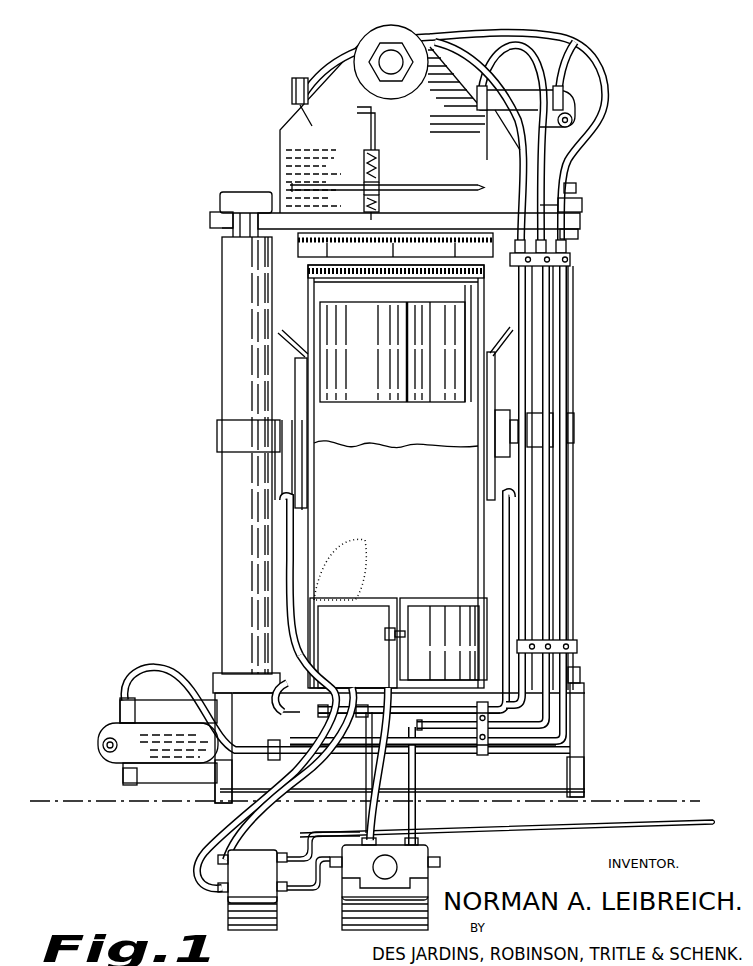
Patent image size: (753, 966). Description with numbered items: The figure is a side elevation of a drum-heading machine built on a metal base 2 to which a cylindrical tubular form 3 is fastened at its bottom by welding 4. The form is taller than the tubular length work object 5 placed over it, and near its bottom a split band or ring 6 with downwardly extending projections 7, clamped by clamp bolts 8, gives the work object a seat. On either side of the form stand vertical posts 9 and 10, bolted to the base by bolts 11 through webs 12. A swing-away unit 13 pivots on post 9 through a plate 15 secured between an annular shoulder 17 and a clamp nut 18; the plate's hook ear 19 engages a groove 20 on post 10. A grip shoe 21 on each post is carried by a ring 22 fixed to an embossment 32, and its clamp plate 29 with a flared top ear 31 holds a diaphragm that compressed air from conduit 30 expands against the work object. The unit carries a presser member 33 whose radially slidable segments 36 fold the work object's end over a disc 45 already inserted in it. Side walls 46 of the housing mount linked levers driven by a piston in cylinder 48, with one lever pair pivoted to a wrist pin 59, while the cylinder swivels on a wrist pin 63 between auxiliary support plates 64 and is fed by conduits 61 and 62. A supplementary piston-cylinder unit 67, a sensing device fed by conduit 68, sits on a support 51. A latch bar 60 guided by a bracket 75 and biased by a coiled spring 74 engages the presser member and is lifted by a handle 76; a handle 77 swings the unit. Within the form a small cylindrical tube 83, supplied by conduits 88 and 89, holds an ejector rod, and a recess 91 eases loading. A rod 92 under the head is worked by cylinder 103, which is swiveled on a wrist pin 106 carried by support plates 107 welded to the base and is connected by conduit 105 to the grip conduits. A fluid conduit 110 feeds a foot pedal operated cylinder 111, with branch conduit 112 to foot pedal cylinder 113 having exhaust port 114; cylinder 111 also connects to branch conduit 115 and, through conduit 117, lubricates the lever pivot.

The metal base 2 is at (585, 718).
The cylindrical tubular form 3 is at (396, 476).
The welding 4 is at (485, 688).
The tubular length work object 5 is at (374, 547).
The split or sectional band or ring 6 is at (440, 598).
The downwardly extending projections 7 is at (318, 628).
The clamp bolts 8 is at (386, 634).
The vertical post 9 is at (575, 348).
The vertical post 10 is at (221, 332).
The bolts 11 is at (245, 688).
The webs 12 is at (218, 681).
The swing-away unit 13 is at (297, 133).
The plate 15 is at (583, 206).
The annular shoulder 17 is at (580, 232).
The clamp nut 18 is at (577, 188).
The hook ear 19 is at (210, 218).
The groove 20 is at (226, 230).
The grip shoe 21 is at (295, 369).
The ring 22 is at (240, 440).
The clamp plate 29 is at (312, 478).
The conduit 30 is at (294, 528).
The outwardly flared top ear 31 is at (297, 333).
The embossment 32 is at (289, 456).
The presser member 33 is at (472, 212).
The radially slidable segments 36 is at (306, 250).
The disc 45 is at (380, 282).
The side walls 46 is at (298, 144).
The cylinder 48 is at (485, 108).
The support 51 is at (319, 118).
The wrist pin 59 is at (401, 51).
The latch bar 60 is at (380, 130).
The conduit 61 is at (485, 76).
The conduit 62 is at (568, 78).
The wrist pin 63 is at (574, 120).
The auxiliary support plates 64 is at (507, 131).
The supplementary piston-cylinder unit 67 is at (296, 78).
The conduit 68 is at (330, 66).
The coiled spring 74 is at (364, 160).
The bracket 75 is at (382, 201).
The handle 76 is at (357, 107).
The handle 77 is at (447, 183).
The small cylindrical tube 83 is at (435, 321).
The conduit 88 is at (190, 868).
The conduit 89 is at (222, 850).
The recess 91 is at (366, 303).
The rod 92 is at (400, 364).
The cylinder 103 is at (197, 772).
The conduit 105 is at (272, 690).
The wrist pin 106 is at (106, 751).
The cylinder 107 is at (125, 728).
The fluid conduit 110 is at (668, 816).
The foot pedal operated cylinder 111 is at (428, 873).
The branch conduit 112 is at (312, 880).
The foot pedal cylinder 113 is at (248, 886).
The exhaust port 114 is at (300, 853).
The branch conduit 115 is at (362, 760).
The conduit 117 is at (396, 703).